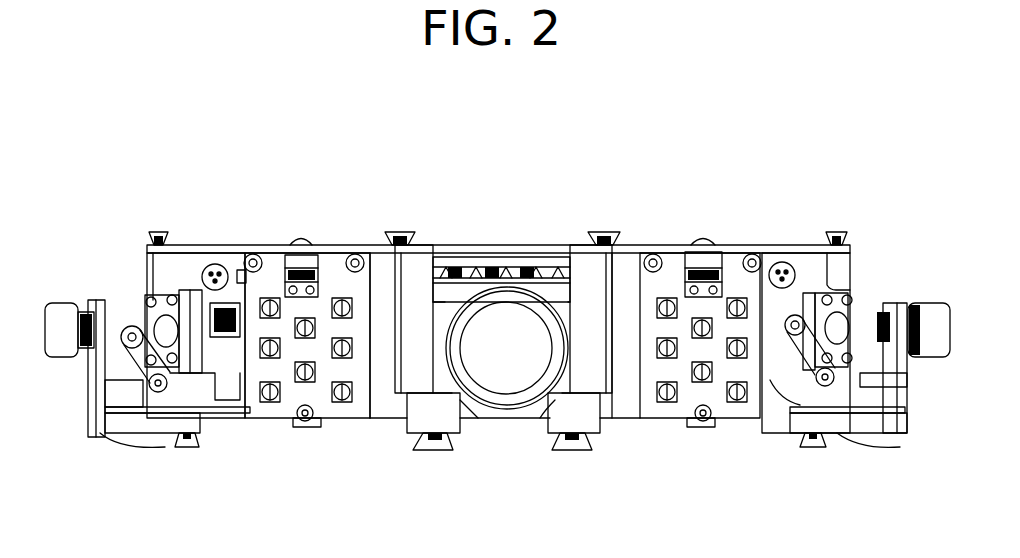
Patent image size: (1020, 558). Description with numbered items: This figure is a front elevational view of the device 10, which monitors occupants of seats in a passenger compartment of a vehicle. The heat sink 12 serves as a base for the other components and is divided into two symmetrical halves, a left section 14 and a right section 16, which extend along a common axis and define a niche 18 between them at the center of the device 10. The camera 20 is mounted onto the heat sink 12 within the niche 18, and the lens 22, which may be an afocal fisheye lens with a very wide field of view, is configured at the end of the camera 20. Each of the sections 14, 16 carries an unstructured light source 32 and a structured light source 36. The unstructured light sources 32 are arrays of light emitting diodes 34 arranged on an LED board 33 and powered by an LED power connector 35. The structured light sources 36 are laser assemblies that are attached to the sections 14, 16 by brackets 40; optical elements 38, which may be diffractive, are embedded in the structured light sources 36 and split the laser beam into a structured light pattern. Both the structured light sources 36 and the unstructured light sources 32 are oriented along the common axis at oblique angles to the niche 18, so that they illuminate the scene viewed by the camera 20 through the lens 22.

The device 10 is at (346, 168).
The heat sink 12 is at (422, 228).
The left section 14 is at (635, 243).
The right section 16 is at (258, 243).
The niche 18 is at (493, 250).
The camera 20 is at (478, 395).
The lens 22 is at (520, 375).
The unstructured light source 32 is at (285, 413).
The LED board 33 is at (330, 250).
The light emitting diodes 34 is at (342, 403).
The LED power connector 35 is at (295, 250).
The structured light source 36 is at (218, 350).
The optical elements 38 is at (165, 335).
The brackets 40 is at (785, 367).